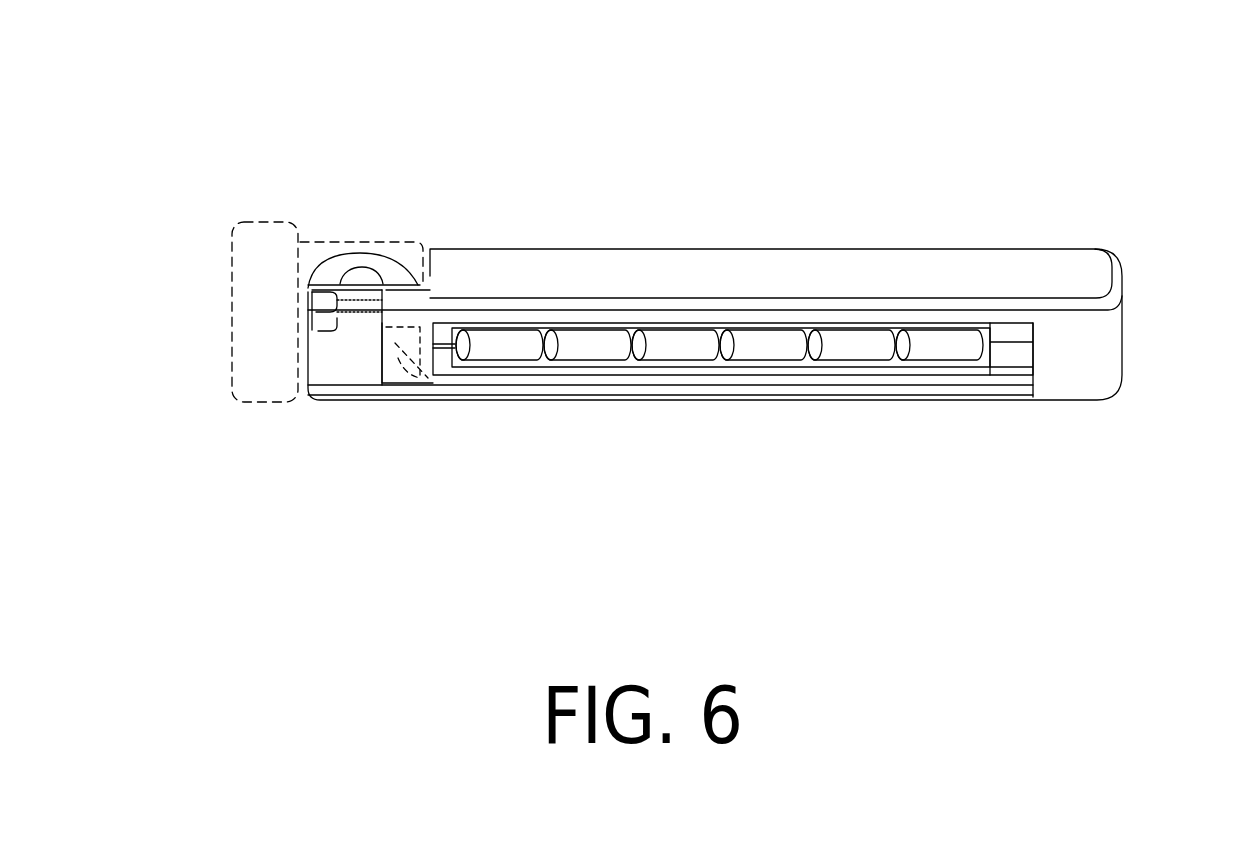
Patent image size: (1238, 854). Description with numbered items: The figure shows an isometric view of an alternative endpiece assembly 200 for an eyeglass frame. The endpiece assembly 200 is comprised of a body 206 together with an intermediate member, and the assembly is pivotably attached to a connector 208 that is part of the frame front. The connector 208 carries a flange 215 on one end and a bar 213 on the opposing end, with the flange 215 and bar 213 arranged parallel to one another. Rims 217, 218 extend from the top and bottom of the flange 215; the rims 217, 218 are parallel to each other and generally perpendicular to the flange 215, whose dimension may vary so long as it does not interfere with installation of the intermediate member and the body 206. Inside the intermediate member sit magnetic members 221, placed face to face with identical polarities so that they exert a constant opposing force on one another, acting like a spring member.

The endpiece assembly 200 is at (226, 133).
The body 206 is at (1068, 278).
The connector 208 is at (280, 345).
The bar 213 is at (375, 320).
The flange 215 is at (263, 275).
The rim 217 is at (400, 249).
The rim 218 is at (403, 343).
The magnetic members 221 is at (982, 322).